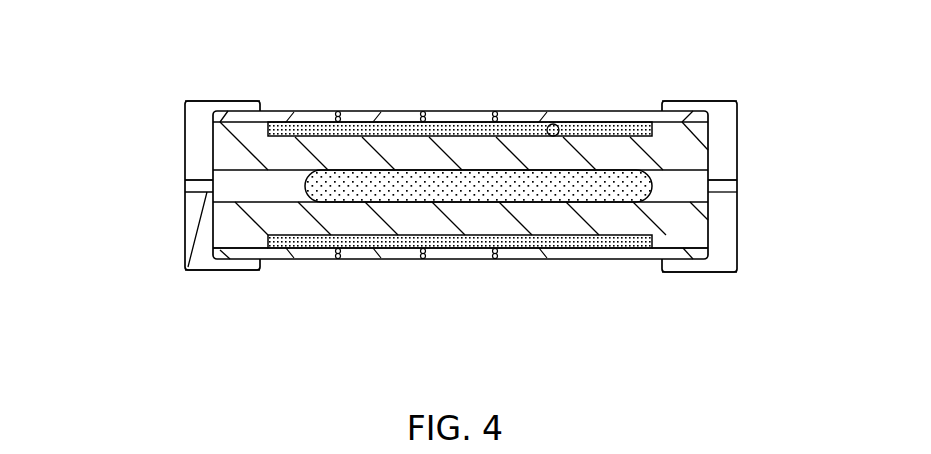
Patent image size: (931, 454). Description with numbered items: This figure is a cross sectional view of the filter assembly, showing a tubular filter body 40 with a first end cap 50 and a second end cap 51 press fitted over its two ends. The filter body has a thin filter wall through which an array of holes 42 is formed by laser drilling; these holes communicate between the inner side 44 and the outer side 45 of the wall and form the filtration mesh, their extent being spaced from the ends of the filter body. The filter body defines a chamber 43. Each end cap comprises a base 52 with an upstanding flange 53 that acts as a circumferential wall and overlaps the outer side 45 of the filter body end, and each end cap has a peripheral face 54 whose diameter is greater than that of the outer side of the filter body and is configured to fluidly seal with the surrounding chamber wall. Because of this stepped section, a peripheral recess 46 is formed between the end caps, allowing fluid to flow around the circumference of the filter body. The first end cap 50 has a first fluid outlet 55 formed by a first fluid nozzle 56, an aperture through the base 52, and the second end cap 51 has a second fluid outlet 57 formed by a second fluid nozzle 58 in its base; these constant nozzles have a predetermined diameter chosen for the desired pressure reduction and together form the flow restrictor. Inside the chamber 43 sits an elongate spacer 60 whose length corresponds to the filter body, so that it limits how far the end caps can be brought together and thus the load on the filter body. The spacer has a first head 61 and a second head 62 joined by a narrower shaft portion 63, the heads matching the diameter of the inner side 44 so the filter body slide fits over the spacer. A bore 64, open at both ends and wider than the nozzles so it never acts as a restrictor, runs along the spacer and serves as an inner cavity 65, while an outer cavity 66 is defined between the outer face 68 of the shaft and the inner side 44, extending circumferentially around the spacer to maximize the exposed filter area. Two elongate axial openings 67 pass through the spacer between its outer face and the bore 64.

The filter body 40 is at (470, 257).
The array of holes 42 is at (493, 118).
The chamber 43 is at (385, 120).
The inner side 44 is at (553, 124).
The outer side 45 is at (592, 110).
The peripheral recess 46 is at (367, 267).
The first end cap 50 is at (225, 270).
The second end cap 51 is at (733, 192).
The base 52 is at (195, 142).
The upstanding flange 53 is at (228, 107).
The peripheral face 54 is at (197, 272).
The first fluid outlet 55 is at (190, 186).
The first fluid nozzle 56 is at (200, 193).
The second fluid outlet 57 is at (737, 184).
The second fluid nozzle 58 is at (723, 190).
The spacer 60 is at (613, 223).
The first head 61 is at (243, 240).
The second head 62 is at (668, 250).
The shaft portion 63 is at (556, 225).
The bore 64 is at (288, 180).
The inner cavity 65 is at (626, 178).
The outer cavity 66 is at (420, 249).
The openings 67 is at (512, 192).
The outer face 68 is at (480, 132).